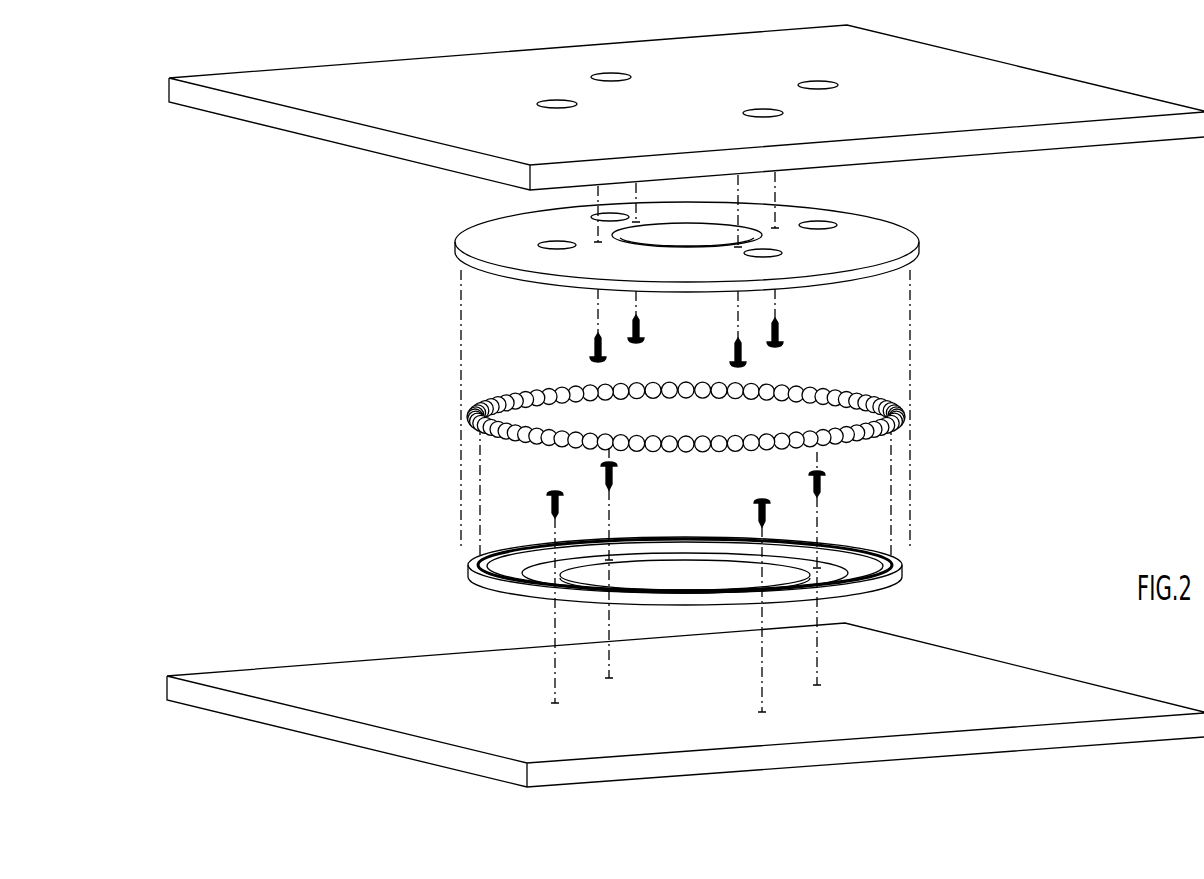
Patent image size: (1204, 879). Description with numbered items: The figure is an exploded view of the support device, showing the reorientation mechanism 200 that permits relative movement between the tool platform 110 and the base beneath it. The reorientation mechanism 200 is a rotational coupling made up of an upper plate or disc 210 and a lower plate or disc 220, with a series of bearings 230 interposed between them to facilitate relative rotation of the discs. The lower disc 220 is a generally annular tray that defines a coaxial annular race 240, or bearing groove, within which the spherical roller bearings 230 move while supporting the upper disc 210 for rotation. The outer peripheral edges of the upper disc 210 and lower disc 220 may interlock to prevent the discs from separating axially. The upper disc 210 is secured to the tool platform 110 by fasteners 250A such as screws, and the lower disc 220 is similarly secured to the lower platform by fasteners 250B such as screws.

The tool platform 110 is at (275, 82).
The reorientation mechanism 200 is at (970, 228).
The upper disc 210 is at (476, 233).
The lower disc 220 is at (478, 583).
The bearings 230 is at (545, 390).
The race 240 is at (893, 569).
The fasteners 250A is at (781, 331).
The fasteners 250B is at (821, 487).